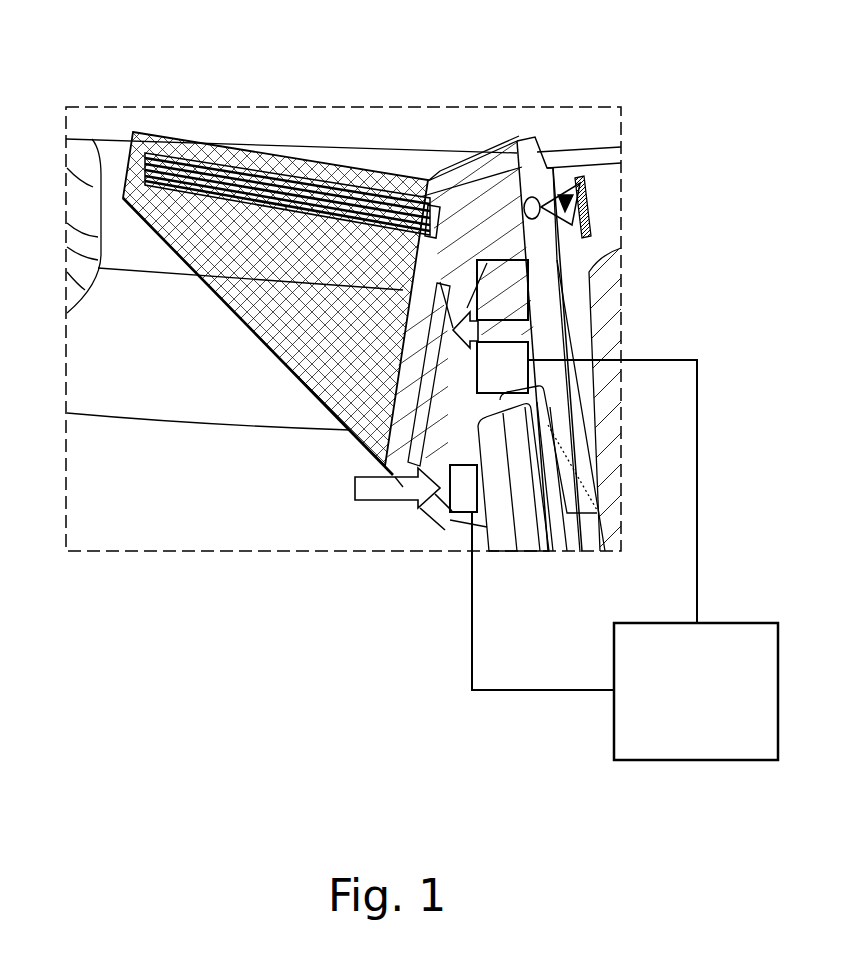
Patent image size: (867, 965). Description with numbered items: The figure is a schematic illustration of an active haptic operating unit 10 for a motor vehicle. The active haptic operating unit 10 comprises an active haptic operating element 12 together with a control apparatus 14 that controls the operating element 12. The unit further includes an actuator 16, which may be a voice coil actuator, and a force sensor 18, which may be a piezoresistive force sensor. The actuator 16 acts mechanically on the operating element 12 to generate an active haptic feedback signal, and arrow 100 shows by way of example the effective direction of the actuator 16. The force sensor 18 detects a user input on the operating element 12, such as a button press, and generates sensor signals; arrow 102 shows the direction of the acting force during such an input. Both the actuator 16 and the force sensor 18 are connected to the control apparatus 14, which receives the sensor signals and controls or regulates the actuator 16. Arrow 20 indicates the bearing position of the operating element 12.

The active haptic operating unit 10 is at (505, 78).
The active haptic operating element 12 is at (368, 307).
The control apparatus 14 is at (712, 706).
The actuator 16 is at (352, 456).
The force sensor 18 is at (454, 521).
The arrow indicating bearing position 20 is at (565, 194).
The arrow showing effective direction of actuator 100 is at (513, 330).
The arrow showing direction of acting force 102 is at (387, 488).